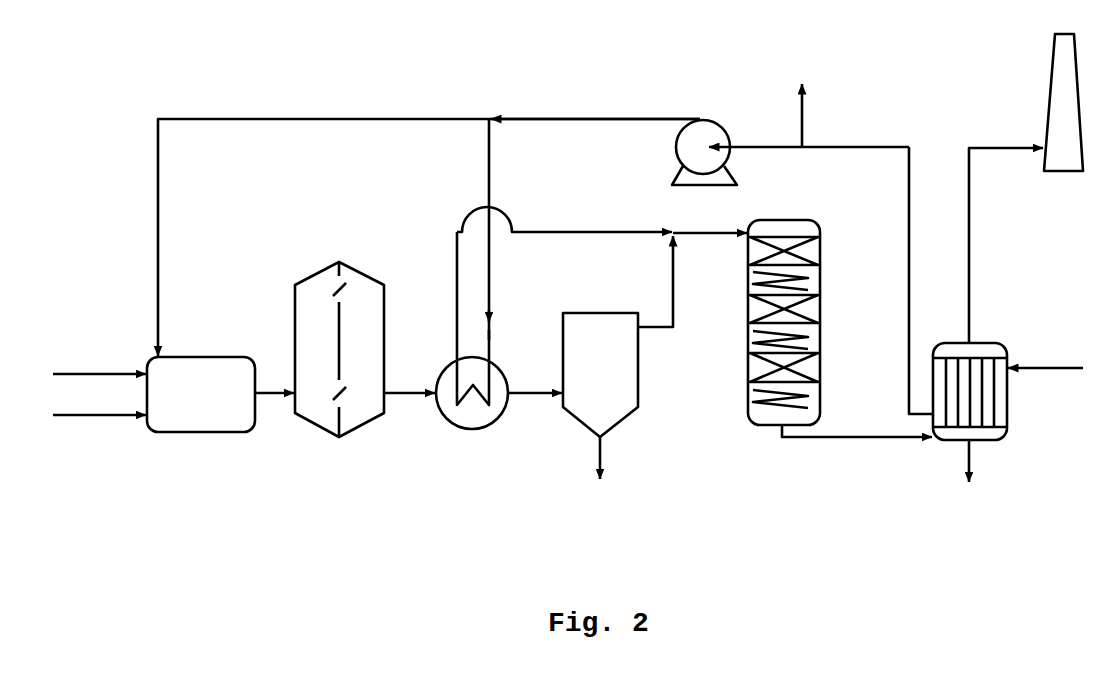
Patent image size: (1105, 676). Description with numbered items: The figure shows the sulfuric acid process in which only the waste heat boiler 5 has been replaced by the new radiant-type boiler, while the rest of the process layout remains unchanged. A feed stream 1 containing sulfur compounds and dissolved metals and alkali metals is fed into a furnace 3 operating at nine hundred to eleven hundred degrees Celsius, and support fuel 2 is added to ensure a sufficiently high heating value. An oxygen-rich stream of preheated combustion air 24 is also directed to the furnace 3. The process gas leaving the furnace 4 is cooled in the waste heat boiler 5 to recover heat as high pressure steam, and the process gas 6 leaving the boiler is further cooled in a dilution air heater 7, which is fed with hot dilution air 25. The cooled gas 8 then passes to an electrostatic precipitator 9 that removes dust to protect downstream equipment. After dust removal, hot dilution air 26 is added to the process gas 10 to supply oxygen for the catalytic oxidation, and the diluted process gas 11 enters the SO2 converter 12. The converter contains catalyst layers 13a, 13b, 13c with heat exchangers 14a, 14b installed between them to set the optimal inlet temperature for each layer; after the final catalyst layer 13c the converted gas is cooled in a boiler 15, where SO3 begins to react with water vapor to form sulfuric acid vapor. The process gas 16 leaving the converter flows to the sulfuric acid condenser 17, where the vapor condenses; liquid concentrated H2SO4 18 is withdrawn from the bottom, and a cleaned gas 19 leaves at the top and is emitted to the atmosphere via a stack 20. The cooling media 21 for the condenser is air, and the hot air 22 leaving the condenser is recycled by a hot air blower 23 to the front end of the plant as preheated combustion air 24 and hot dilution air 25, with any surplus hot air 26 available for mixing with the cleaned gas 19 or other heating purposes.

The feed stream 1 is at (99, 436).
The support fuel 2 is at (99, 359).
The furnace 3 is at (201, 394).
The process gas leaving the furnace 4 is at (274, 420).
The waste heat boiler 5 is at (339, 367).
The process gas leaving the waste heat boiler 6 is at (409, 420).
The dilution air heater 7 is at (472, 353).
The cooled stream line 8 is at (535, 419).
The electrostatic precipitator 9 is at (600, 396).
The process gas 10 is at (646, 281).
The diluted process gas 11 is at (710, 215).
The SO2 converter 12 is at (792, 303).
The catalyst layer 13a is at (807, 247).
The catalyst layer 13b is at (807, 305).
The final catalyst layer 13c is at (806, 366).
The heat exchanger 14a is at (750, 273).
The heat exchanger 14b is at (750, 333).
The boiler 15 is at (753, 395).
The process gas 16 is at (857, 447).
The sulfuric acid condenser 17 is at (979, 372).
The liquid concentrated H2SO4 18 is at (989, 461).
The cleaned gas 19 is at (1006, 245).
The stack 20 is at (1043, 102).
The cooling media 21 is at (1045, 384).
The hot air 22 is at (821, 261).
The hot air blower 23 is at (704, 132).
The preheated combustion air 24 is at (429, 237).
The hot dilution air 25 is at (574, 229).
The hot dilution air 26 is at (634, 142).